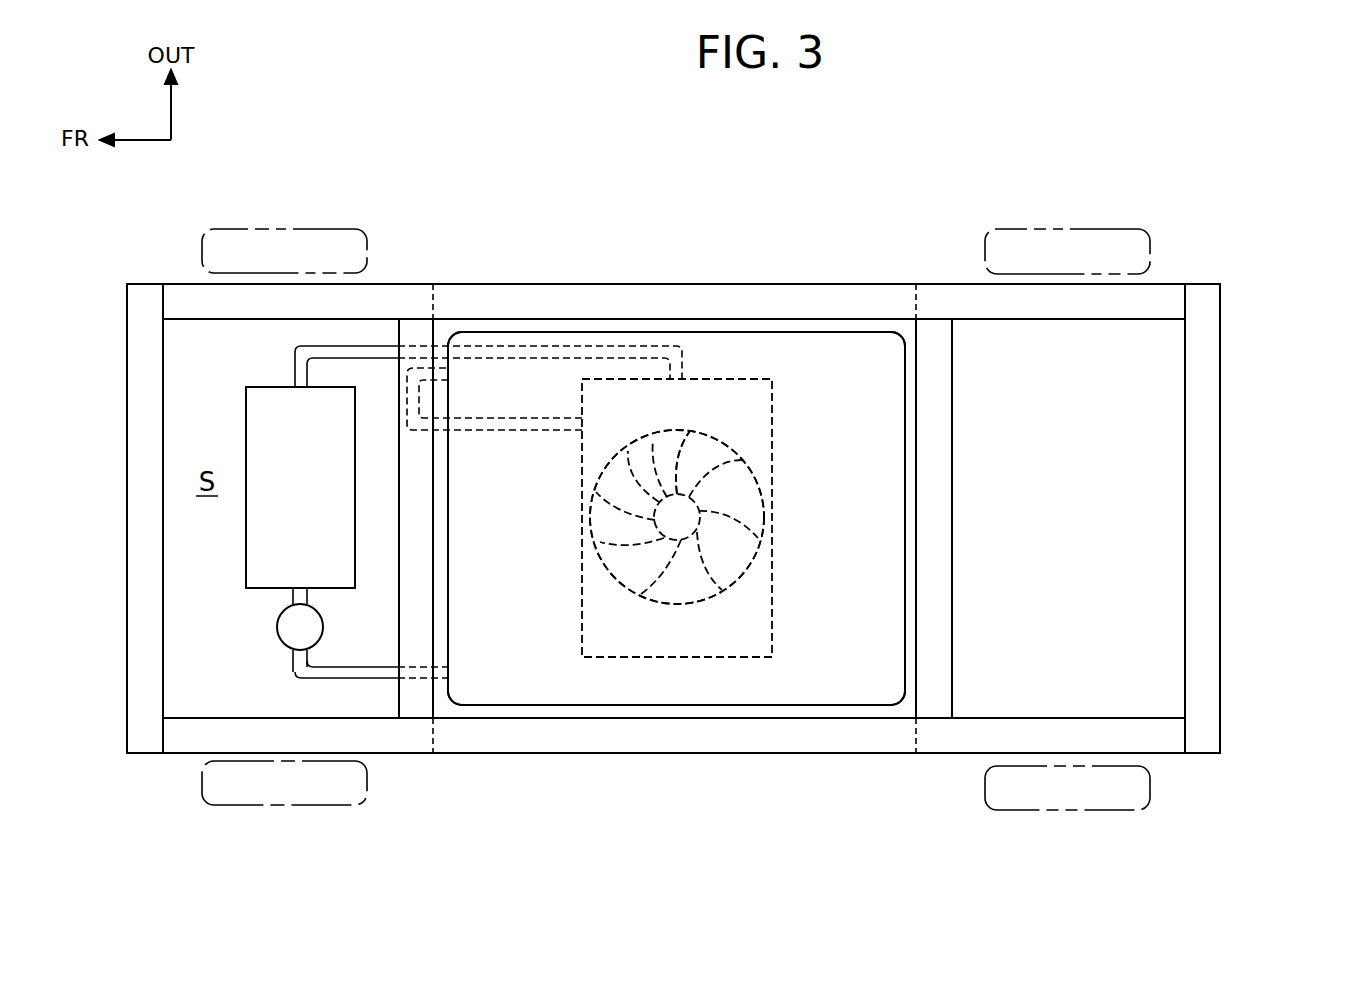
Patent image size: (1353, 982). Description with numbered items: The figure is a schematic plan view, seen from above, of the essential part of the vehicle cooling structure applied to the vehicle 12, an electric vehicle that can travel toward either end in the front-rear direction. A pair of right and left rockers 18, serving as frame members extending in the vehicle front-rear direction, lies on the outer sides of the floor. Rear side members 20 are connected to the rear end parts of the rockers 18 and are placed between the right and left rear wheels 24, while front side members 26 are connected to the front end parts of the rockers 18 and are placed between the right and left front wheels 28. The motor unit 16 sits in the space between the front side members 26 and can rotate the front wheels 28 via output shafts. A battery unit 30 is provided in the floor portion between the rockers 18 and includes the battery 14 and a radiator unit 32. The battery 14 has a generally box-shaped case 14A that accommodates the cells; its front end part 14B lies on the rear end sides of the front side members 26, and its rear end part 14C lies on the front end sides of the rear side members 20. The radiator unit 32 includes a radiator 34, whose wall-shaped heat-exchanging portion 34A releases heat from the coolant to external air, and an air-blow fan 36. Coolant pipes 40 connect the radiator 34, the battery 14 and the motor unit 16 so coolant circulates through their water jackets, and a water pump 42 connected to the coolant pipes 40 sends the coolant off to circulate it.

The vehicle 12 is at (1266, 327).
The battery 14 is at (818, 332).
The case 14A is at (790, 543).
The front end part 14B is at (452, 540).
The rear end part 14C is at (890, 513).
The motor unit 16 is at (298, 505).
The rockers 18 is at (605, 302).
The rear side members 20 is at (1162, 296).
The rear wheels 24 is at (1090, 245).
The front side members 26 is at (183, 287).
The front wheels 28 is at (302, 235).
The battery unit 30 is at (742, 331).
The radiator unit 32 is at (772, 627).
The radiator 34 is at (748, 507).
The heat-exchanging portion 34A is at (757, 590).
The air-blow fan 36 is at (797, 412).
The coolant pipes 40 is at (365, 353).
The water pump 42 is at (278, 630).